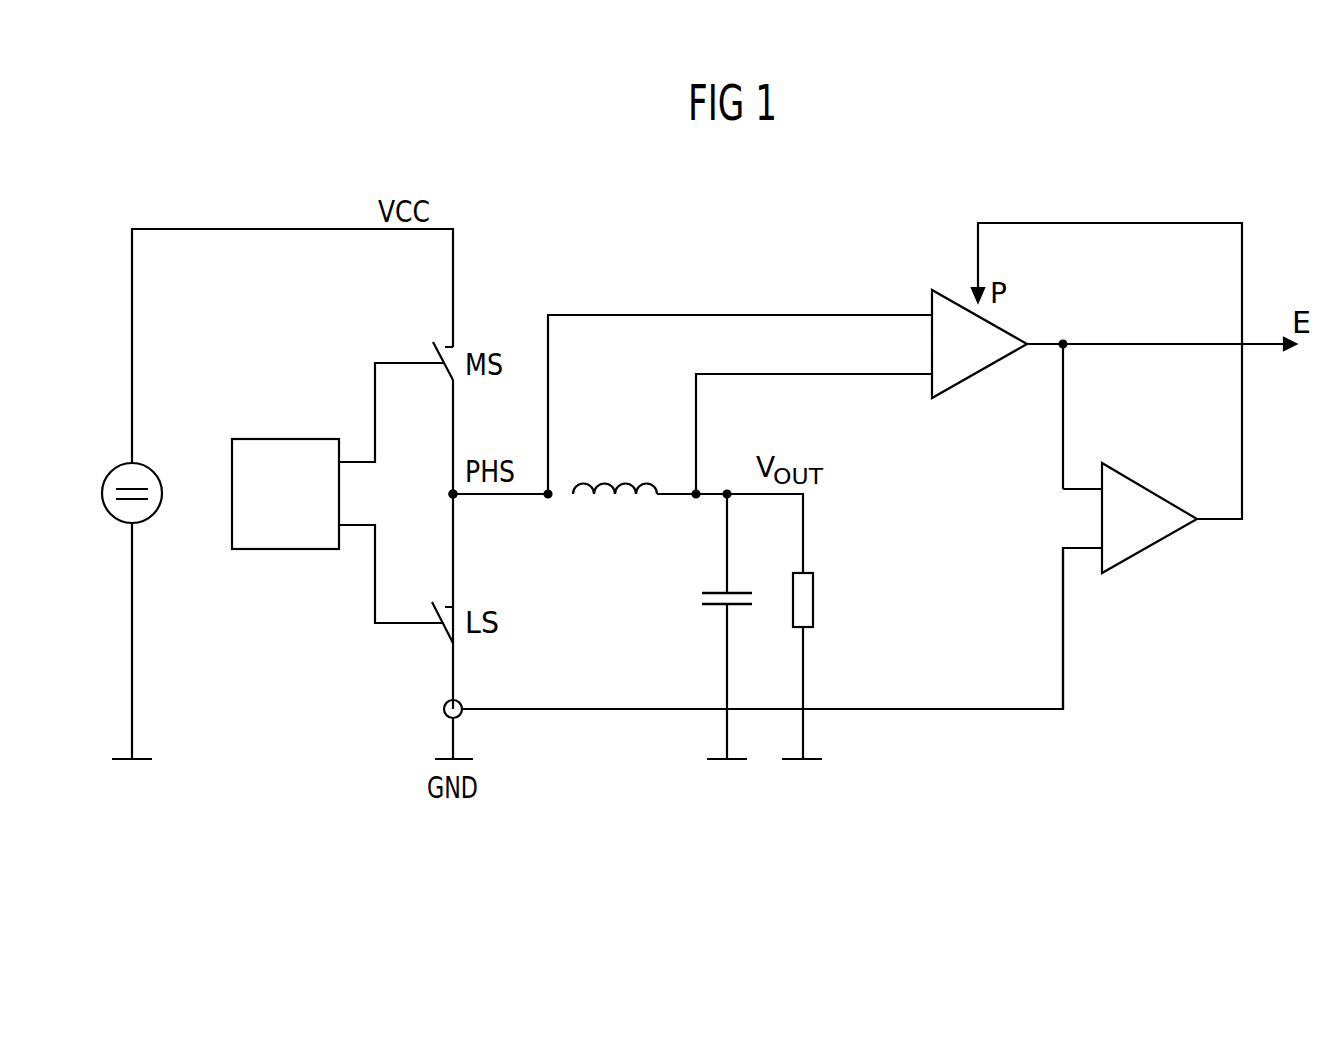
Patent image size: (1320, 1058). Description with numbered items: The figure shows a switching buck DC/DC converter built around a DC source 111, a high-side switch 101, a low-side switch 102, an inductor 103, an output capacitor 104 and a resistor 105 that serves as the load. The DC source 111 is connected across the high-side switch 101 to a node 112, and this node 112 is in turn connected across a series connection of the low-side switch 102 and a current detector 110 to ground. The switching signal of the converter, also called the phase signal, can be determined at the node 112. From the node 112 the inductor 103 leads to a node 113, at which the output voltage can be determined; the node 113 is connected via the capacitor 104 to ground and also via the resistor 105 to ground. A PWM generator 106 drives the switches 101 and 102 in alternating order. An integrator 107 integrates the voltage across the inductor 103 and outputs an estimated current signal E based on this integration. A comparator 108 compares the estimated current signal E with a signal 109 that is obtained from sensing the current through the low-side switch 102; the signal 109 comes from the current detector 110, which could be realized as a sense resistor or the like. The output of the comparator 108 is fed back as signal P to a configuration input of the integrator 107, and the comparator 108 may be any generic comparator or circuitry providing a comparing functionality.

The high-side switch 101 is at (431, 344).
The low-side switch 102 is at (441, 632).
The inductor 103 is at (603, 480).
The output capacitor 104 is at (715, 608).
The resistor 105 is at (813, 597).
The PWM generator 106 is at (285, 437).
The integrator 107 is at (946, 291).
The comparator 108 is at (1145, 551).
The signal 109 is at (1064, 668).
The current detector 110 is at (461, 701).
The DC source 111 is at (148, 474).
The node 112 is at (448, 487).
The node 113 is at (803, 505).